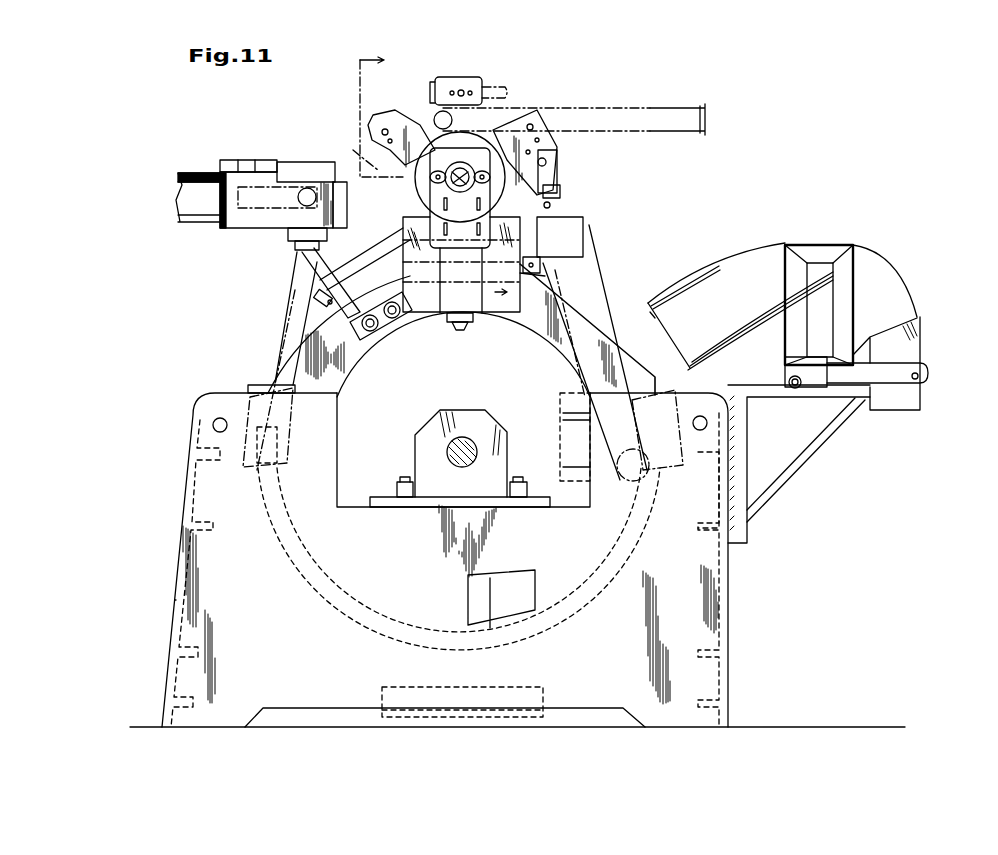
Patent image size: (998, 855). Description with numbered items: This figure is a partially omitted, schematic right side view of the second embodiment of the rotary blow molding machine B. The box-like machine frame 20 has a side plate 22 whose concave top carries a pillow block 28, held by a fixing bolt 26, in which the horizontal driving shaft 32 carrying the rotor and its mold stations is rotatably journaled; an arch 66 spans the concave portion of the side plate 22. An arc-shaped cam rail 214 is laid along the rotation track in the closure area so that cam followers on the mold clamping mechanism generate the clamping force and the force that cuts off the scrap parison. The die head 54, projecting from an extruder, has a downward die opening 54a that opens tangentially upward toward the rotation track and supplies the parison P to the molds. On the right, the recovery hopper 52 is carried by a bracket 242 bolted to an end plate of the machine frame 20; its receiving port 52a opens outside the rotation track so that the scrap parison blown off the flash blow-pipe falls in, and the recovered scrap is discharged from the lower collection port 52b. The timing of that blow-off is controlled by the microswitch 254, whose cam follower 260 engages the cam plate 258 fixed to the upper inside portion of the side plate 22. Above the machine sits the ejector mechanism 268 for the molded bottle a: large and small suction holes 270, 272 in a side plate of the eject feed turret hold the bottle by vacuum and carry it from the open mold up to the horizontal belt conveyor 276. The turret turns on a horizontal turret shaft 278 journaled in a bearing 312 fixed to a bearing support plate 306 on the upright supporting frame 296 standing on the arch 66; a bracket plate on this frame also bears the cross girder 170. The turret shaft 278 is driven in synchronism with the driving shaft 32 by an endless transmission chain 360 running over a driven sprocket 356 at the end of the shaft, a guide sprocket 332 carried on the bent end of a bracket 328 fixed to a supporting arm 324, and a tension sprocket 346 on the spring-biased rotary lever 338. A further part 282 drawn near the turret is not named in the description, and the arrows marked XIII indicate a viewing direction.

The box-like frame 20 is at (705, 581).
The side plate 22 is at (218, 567).
The fixing bolt 26 is at (403, 482).
The pillow block 28 is at (445, 423).
The horizontal driving shaft 32 is at (452, 445).
The recovery hopper 52 is at (758, 248).
The receiving port 52a is at (658, 313).
The lower collection port 52b is at (889, 412).
The die head 54 is at (252, 220).
The downward die opening 54a is at (295, 246).
The arch 66 is at (318, 333).
The cross girder 170 is at (353, 150).
The cam rail 214 is at (602, 595).
The bracket 242 is at (750, 439).
The microswitch 254 is at (462, 325).
The cam plate 258 is at (566, 417).
The cam follower 260 is at (470, 325).
The ejector mechanism 268 is at (592, 90).
The large suction hole 270 is at (463, 89).
The small suction hole 272 is at (451, 90).
The horizontal belt conveyor 276 is at (640, 108).
The horizontal turret shaft 278 is at (516, 128).
The cam plate 282 is at (385, 125).
The supporting frame 296 is at (368, 262).
The bearing support plate 306 is at (553, 188).
The bearing 312 is at (445, 160).
The supporting arm 324 is at (575, 236).
The bracket 328 is at (542, 262).
The guide sprocket 332 is at (545, 276).
The rotary lever 338 is at (550, 195).
The tension sprocket 346 is at (560, 161).
The driven sprocket 356 is at (498, 150).
The endless transmission chain 360 is at (568, 347).
The parison P is at (294, 301).
The molded bottle a is at (495, 93).
The rotary blow molding machine B is at (762, 143).
The section line XIII is at (449, 177).